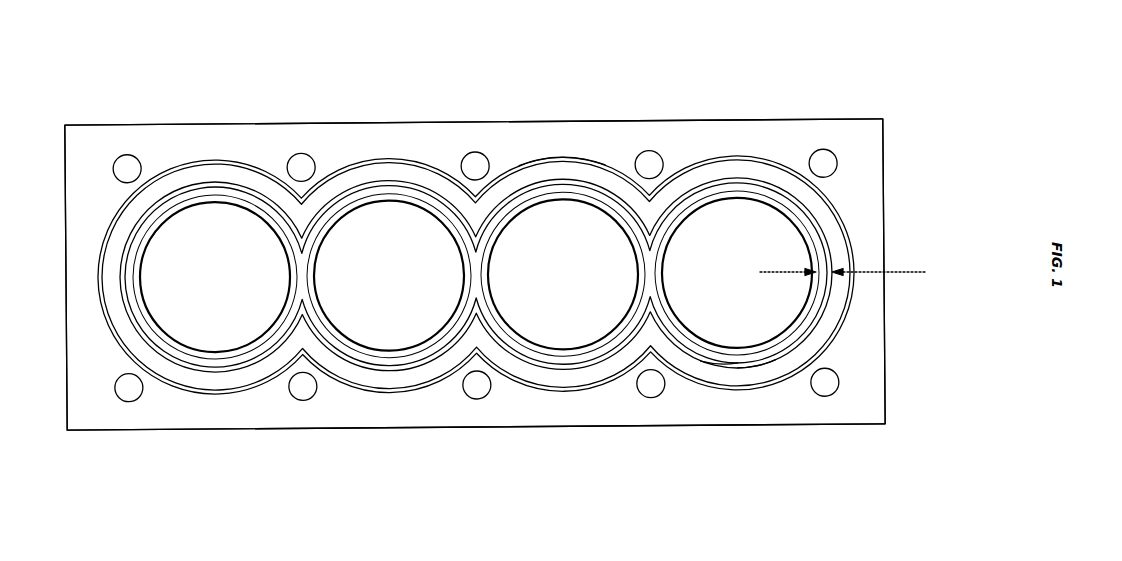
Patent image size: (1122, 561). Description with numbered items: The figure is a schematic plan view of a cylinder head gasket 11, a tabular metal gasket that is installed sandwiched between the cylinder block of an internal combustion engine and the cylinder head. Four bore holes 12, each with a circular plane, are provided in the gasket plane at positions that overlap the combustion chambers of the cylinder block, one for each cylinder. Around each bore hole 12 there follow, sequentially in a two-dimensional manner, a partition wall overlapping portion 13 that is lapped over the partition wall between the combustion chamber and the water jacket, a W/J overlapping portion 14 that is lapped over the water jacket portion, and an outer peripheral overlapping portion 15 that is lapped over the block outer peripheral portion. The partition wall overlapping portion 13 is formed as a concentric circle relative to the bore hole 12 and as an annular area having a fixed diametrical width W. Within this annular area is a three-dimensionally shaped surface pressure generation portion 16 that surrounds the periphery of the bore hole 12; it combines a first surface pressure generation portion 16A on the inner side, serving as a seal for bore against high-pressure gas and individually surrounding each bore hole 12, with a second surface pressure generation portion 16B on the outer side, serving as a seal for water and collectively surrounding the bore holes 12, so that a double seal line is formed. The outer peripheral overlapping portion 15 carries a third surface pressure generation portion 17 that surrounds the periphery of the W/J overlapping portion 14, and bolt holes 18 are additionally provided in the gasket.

The cylinder head gasket 11 is at (192, 117).
The bore hole 12 is at (204, 282).
The partition wall overlapping portion 13 is at (855, 257).
The W/J overlapping portion 14 is at (830, 228).
The outer peripheral overlapping portion 15 is at (865, 178).
The surface pressure generation portion 16 is at (731, 185).
The first surface pressure generation portion 16A is at (711, 360).
The second surface pressure generation portion 16B is at (750, 358).
The third surface pressure generation portion 17 is at (557, 152).
The bolt hole 18 is at (306, 163).
The diametrical width W is at (853, 272).